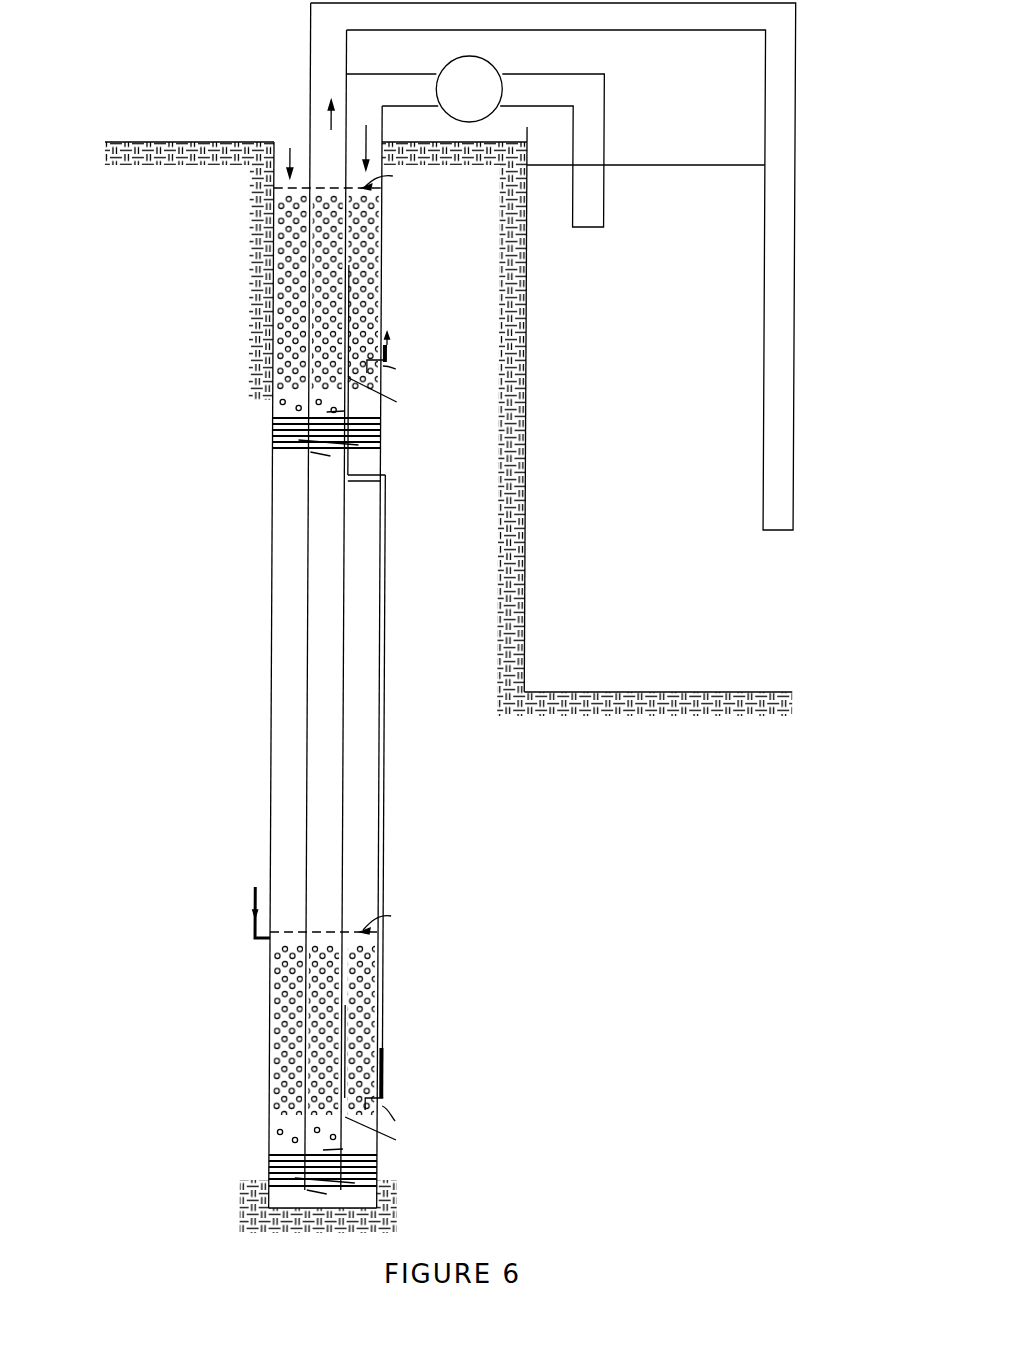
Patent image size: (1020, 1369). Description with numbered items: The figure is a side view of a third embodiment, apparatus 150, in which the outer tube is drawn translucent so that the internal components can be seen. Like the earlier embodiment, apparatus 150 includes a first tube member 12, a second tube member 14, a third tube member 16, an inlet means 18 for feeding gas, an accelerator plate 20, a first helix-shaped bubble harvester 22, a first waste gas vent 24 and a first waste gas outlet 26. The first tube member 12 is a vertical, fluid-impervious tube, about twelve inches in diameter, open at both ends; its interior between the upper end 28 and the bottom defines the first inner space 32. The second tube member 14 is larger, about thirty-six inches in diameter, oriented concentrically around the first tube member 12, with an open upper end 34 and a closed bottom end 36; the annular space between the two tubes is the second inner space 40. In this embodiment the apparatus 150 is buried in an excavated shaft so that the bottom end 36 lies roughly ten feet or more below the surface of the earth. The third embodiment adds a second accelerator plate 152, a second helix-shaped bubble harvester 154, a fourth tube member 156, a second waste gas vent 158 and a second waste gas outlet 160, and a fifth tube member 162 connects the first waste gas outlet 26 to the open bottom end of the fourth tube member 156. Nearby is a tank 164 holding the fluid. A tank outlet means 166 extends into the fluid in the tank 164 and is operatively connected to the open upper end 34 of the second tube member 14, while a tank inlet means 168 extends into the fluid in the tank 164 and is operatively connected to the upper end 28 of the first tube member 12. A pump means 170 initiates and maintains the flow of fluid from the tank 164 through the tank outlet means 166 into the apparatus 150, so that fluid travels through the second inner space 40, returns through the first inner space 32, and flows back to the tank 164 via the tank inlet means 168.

The apparatus 150 is at (195, 577).
The second tube member 14 is at (274, 830).
The first tube member 12 is at (347, 875).
The first inner space 32 is at (326, 777).
The second inner space 40 is at (291, 760).
The open upper end 34 is at (293, 143).
The upper end 28 is at (325, 135).
The tank inlet means 168 is at (795, 97).
The pump means 170 is at (491, 65).
The tank outlet means 166 is at (605, 112).
The tank 164 is at (500, 546).
The second accelerator plate 152 is at (368, 190).
The fourth tube member 156 is at (350, 283).
The second waste gas outlet 160 is at (391, 356).
The second waste gas vent 158 is at (377, 372).
The second helix-shaped bubble harvester 154 is at (274, 433).
The fifth tube member 162 is at (390, 677).
The gas feed inlet 18 is at (257, 932).
The accelerator plate 20 is at (372, 936).
The third tube member 16 is at (352, 1042).
The waste gas tube 26 is at (389, 1090).
The waste gas vent 24 is at (389, 1100).
The bubble harvester 22 is at (274, 1165).
The closed bottom end 36 is at (303, 1210).